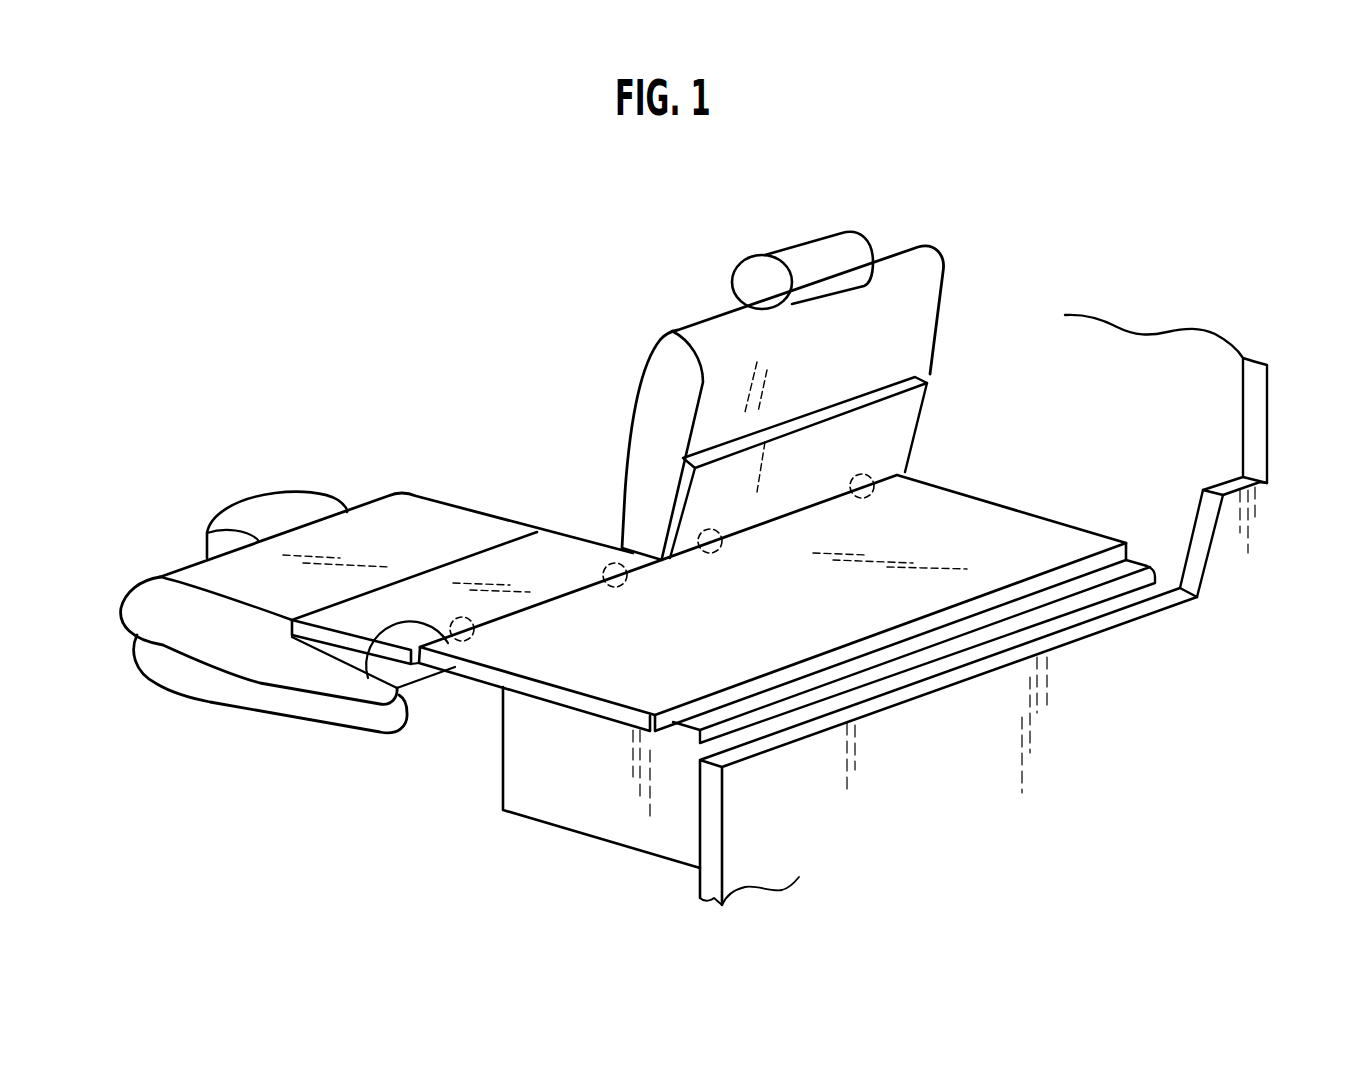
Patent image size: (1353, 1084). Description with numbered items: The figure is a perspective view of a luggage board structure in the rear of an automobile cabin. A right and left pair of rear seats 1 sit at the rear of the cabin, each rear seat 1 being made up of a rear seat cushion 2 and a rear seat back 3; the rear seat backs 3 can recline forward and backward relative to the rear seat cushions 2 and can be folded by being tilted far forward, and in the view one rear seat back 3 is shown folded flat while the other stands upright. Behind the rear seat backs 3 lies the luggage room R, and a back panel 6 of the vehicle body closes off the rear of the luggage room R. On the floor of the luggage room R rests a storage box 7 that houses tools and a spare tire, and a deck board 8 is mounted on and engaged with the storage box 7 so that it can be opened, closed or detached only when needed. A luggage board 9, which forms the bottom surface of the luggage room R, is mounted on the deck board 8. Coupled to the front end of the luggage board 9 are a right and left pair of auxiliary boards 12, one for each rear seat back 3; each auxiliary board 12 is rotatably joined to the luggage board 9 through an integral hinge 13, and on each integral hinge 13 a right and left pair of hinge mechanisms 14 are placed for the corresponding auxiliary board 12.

The rear seat 1 is at (178, 535).
The rear seat cushion 2 is at (203, 683).
The rear seat back 3 is at (402, 513).
The back panel 6 is at (903, 722).
The storage box 7 is at (580, 807).
The deck board 8 is at (1068, 590).
The luggage board 9 is at (1020, 527).
The auxiliary board 12 is at (500, 567).
The integral hinge 13 is at (400, 621).
The hinge mechanism 14 is at (474, 630).
The luggage room R is at (1075, 404).